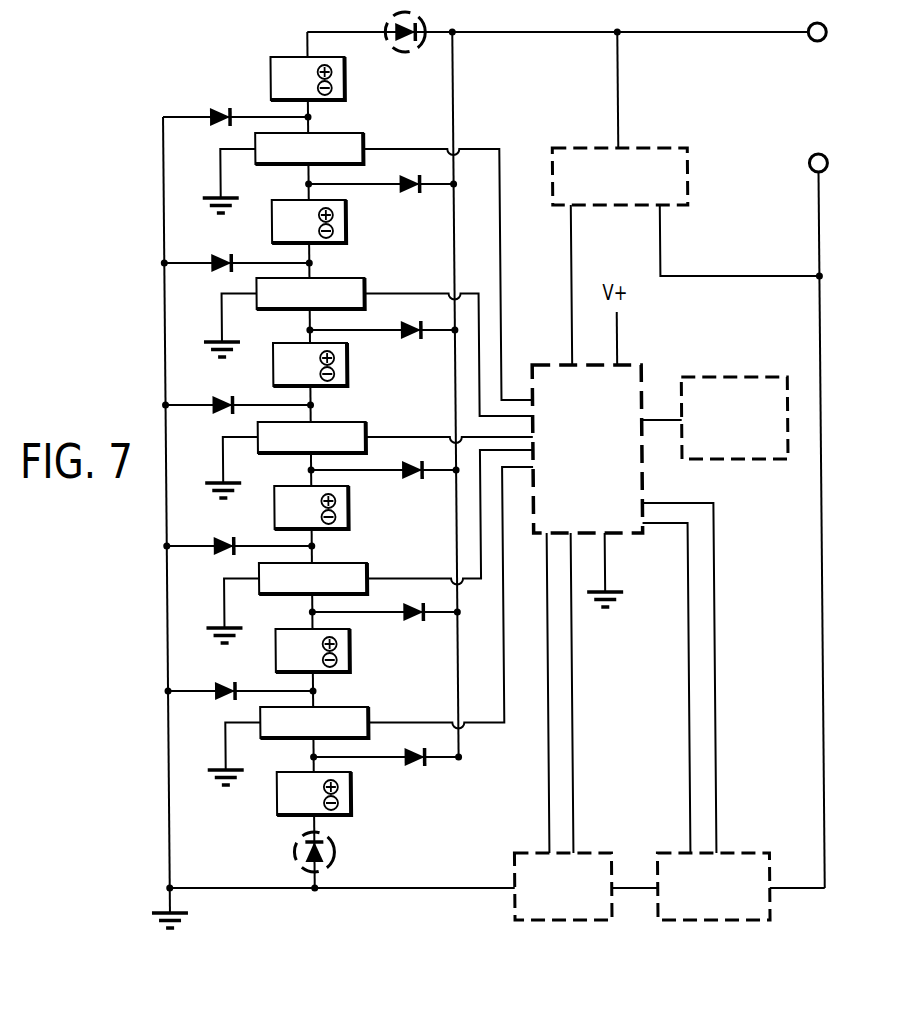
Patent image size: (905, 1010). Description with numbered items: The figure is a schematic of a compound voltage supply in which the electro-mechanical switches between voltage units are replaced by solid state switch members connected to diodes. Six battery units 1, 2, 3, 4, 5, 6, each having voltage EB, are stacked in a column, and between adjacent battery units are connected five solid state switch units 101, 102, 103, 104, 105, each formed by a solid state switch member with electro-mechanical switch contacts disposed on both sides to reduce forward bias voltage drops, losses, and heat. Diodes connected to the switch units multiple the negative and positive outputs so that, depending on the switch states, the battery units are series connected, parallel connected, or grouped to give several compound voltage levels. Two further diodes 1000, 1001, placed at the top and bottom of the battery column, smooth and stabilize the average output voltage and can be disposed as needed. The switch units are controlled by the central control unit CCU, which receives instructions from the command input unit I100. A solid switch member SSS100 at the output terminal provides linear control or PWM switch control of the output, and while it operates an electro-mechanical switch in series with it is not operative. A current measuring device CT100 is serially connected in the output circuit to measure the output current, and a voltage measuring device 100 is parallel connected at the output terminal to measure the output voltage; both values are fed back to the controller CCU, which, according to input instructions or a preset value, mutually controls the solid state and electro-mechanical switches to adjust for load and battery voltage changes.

The diode 1000 is at (447, 26).
The diode 1001 is at (353, 852).
The battery unit 1 is at (307, 78).
The battery unit 2 is at (309, 221).
The battery unit 3 is at (310, 364).
The battery unit 4 is at (311, 507).
The battery unit 5 is at (312, 650).
The battery unit 6 is at (314, 793).
The solid state switch unit 101 is at (309, 148).
The solid state switch unit 102 is at (310, 293).
The solid state switch unit 103 is at (312, 437).
The solid state switch unit 104 is at (313, 578).
The solid state switch unit 105 is at (314, 722).
The voltage measuring device 100 is at (619, 176).
The central control unit CCU is at (587, 449).
The command input unit I100 is at (734, 418).
The current measuring device CT100 is at (563, 886).
The solid switch member SSS100 is at (713, 886).